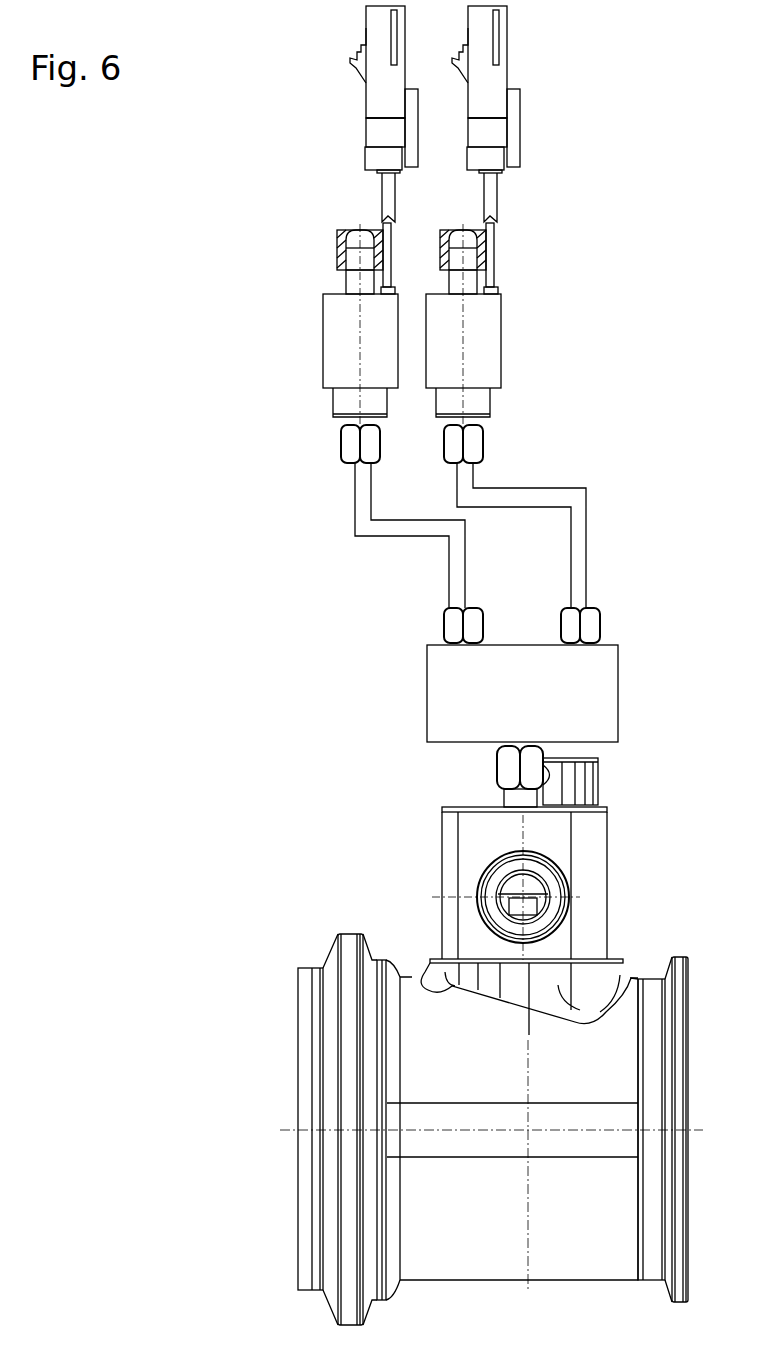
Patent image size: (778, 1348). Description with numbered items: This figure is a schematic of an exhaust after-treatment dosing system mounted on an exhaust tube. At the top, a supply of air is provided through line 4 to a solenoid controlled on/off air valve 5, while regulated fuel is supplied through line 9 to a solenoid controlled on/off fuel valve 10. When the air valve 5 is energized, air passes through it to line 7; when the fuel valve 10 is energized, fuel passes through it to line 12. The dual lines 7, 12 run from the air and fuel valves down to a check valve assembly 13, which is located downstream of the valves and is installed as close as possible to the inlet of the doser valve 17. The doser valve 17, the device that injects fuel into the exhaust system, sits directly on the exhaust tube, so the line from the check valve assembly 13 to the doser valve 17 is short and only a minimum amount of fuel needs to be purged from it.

The line 4 is at (385, 200).
The line 9 is at (493, 200).
The air valve 5 is at (325, 375).
The fuel valve 10 is at (500, 367).
The line 7 is at (353, 502).
The line 12 is at (587, 486).
The check valve assembly 13 is at (620, 648).
The doser valve 17 is at (598, 837).